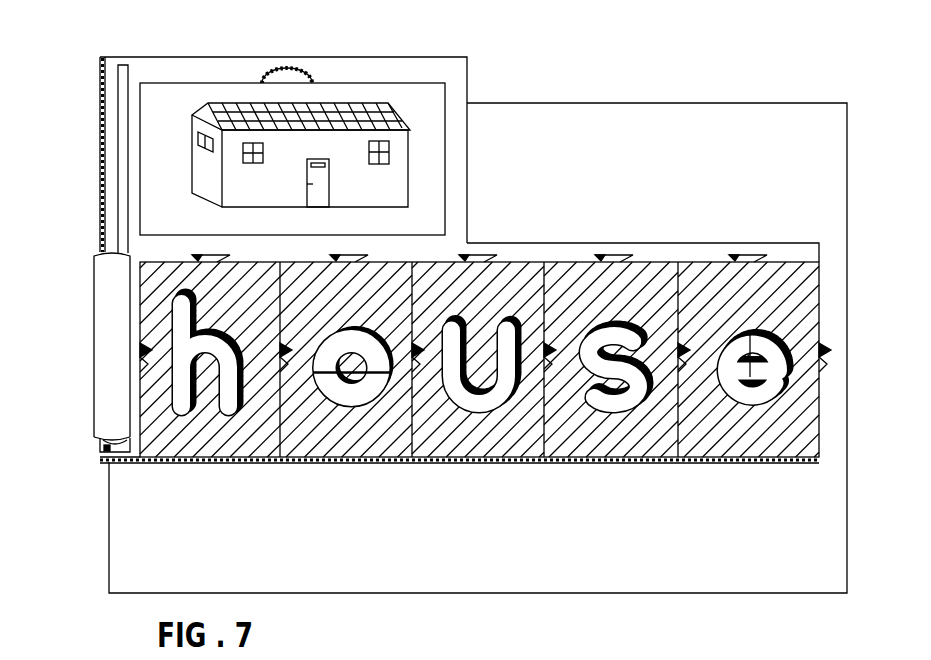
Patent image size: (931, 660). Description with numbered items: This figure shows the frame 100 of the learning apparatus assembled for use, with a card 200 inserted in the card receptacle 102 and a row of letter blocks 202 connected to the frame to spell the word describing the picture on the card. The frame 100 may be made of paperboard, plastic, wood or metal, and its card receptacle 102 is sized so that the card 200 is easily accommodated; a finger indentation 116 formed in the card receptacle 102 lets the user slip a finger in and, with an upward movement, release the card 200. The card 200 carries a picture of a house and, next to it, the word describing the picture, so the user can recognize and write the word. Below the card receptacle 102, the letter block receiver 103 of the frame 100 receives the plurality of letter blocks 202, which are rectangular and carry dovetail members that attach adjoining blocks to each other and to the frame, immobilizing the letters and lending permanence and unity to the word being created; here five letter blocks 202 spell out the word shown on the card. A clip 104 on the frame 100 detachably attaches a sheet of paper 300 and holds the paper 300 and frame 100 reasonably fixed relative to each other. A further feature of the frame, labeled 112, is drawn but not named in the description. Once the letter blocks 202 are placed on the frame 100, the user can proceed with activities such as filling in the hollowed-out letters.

The frame 100 is at (98, 152).
The card receptacle 102 is at (455, 97).
The letter block receiver 103 is at (545, 243).
The clip 104 is at (103, 354).
The card channel 112 is at (136, 66).
The finger indentation 116 is at (287, 72).
The card 200 is at (440, 96).
The letter block 202 is at (235, 449).
The sheet of paper 300 is at (786, 135).